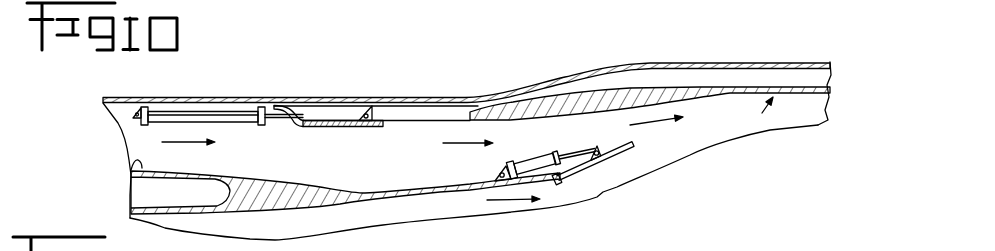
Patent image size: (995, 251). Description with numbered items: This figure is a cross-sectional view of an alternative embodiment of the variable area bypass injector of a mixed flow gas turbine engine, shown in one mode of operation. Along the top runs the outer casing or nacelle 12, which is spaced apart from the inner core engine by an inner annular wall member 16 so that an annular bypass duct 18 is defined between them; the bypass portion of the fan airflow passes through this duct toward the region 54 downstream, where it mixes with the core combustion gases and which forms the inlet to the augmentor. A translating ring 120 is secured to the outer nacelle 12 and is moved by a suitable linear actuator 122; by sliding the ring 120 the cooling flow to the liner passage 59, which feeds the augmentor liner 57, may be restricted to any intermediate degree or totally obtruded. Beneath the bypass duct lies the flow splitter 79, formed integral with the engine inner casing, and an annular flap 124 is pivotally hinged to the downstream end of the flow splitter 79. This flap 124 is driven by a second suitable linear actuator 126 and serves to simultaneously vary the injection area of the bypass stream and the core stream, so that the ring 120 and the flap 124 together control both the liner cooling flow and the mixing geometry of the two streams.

The outer casing or nacelle 12 is at (320, 99).
The inner annular wall member 16 is at (129, 163).
The annular bypass duct 18 is at (244, 154).
The mixing region 54 is at (354, 221).
The augmentor liner 57 is at (650, 110).
The liner passage 59 is at (745, 59).
The flow splitter 79 is at (445, 190).
The translating ring 120 is at (413, 106).
The linear actuator 122 is at (230, 89).
The annular flap 124 is at (598, 163).
The linear actuator 126 is at (533, 162).